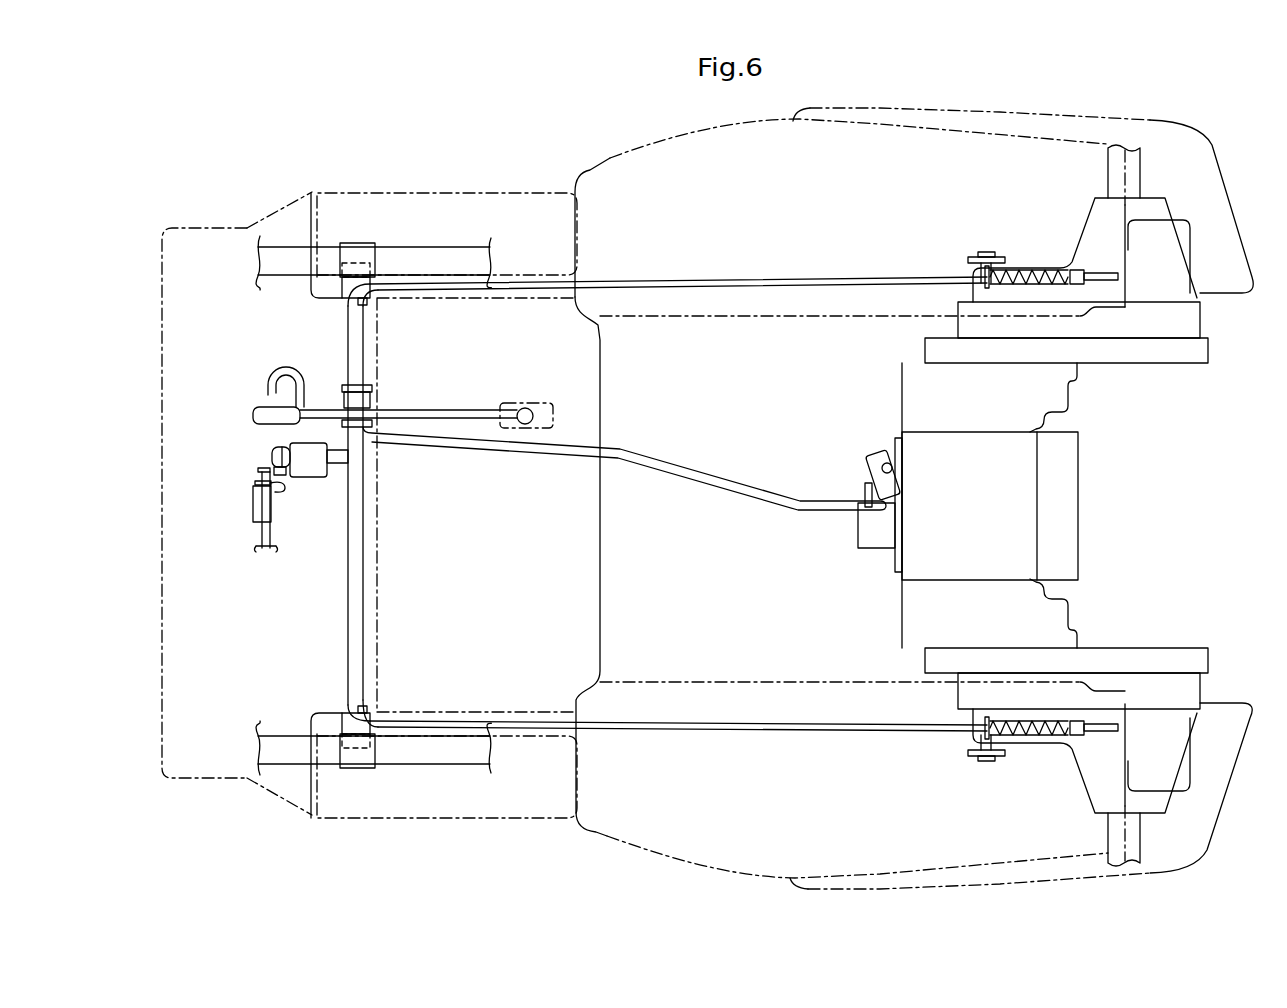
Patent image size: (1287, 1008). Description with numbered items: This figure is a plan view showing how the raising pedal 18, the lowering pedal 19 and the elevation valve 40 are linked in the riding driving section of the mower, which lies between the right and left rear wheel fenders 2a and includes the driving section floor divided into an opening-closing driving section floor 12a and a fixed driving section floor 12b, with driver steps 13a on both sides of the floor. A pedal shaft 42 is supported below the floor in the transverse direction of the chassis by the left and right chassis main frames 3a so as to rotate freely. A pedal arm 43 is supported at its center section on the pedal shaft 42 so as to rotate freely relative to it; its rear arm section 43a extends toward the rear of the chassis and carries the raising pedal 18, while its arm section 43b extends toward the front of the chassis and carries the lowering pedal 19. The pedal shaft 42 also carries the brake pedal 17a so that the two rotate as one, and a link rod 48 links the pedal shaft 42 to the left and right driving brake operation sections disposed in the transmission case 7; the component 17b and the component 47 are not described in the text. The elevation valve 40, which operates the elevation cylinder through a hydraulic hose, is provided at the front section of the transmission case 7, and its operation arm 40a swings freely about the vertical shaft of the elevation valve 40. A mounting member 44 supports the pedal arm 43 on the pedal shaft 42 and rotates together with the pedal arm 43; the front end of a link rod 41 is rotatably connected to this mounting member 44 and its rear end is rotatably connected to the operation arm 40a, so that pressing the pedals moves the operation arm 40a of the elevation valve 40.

The rear wheel fender 2a is at (607, 158).
The chassis main frame 3a is at (431, 248).
The transmission case 7 is at (913, 557).
The opening-closing driving section floor 12a is at (573, 568).
The fixed driving section floor 12b is at (213, 237).
The driver step 13a is at (484, 194).
The brake pedal 17a is at (309, 472).
The valve 17b is at (257, 508).
The raising pedal 18 is at (527, 404).
The lowering pedal 19 is at (290, 385).
The elevation valve 40 is at (904, 461).
The operation arm 40a is at (887, 486).
The link rod 41 is at (713, 480).
The pedal shaft 42 is at (348, 631).
The pedal arm 43 is at (404, 375).
The rear arm section 43a is at (465, 405).
The arm section 43b is at (327, 405).
The mounting member 44 is at (365, 412).
The bracket 47 is at (980, 255).
The link rod 48 is at (779, 282).